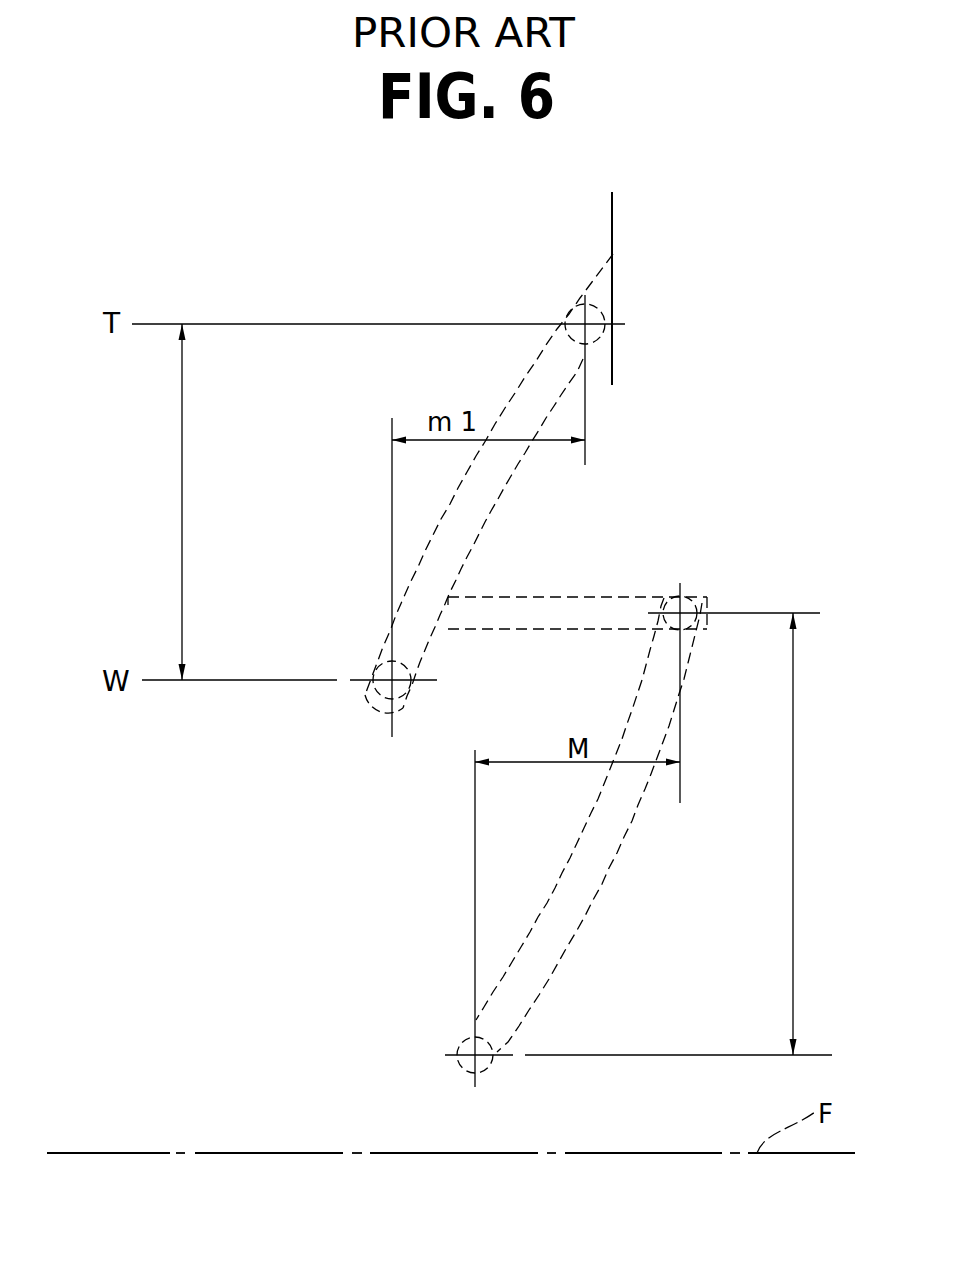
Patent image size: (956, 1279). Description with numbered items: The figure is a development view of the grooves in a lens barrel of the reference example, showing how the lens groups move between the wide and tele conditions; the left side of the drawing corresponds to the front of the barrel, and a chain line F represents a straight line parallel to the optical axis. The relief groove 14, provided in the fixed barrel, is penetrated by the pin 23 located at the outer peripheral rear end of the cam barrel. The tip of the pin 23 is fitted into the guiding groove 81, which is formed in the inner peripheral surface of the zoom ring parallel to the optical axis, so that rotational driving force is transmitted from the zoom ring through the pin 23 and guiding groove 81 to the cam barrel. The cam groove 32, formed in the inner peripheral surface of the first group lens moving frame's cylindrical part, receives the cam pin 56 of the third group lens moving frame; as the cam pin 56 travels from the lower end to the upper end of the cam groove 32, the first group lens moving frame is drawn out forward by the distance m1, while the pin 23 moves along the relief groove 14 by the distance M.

The cam groove 32 is at (510, 473).
The guiding groove 81 is at (582, 598).
The pin 23 is at (685, 592).
The cam pin 56 is at (637, 895).
The relief groove 14 is at (614, 861).